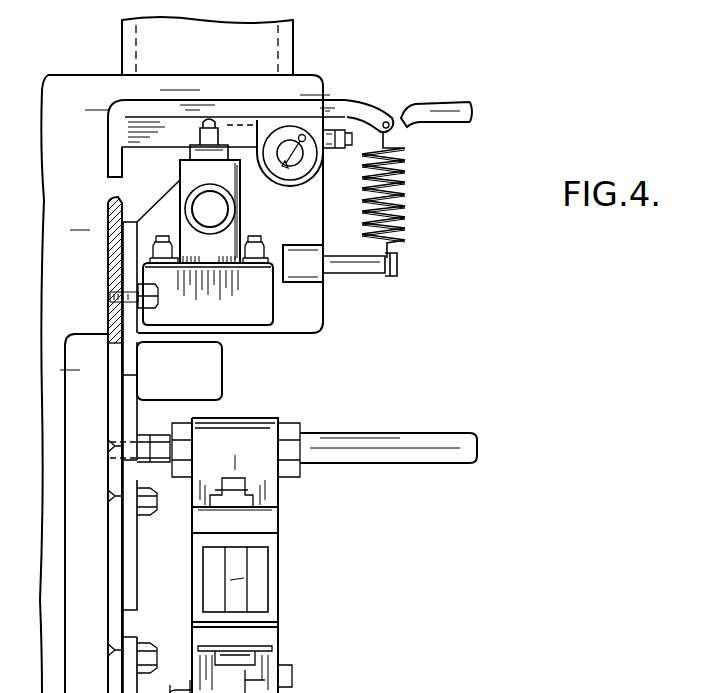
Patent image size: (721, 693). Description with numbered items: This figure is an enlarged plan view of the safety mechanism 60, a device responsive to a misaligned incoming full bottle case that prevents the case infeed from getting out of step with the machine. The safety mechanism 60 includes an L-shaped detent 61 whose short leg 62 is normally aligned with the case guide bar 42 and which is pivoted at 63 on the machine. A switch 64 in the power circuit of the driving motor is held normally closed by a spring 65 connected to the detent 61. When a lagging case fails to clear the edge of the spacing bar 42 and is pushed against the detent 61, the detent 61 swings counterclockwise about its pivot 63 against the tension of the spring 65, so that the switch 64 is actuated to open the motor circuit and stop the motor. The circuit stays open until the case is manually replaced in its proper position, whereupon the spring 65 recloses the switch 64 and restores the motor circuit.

The spacing bar 42 is at (113, 542).
The safety mechanism 60 is at (390, 86).
The L-shaped detent 61 is at (262, 111).
The short leg 62 is at (115, 152).
The pivot 63 is at (302, 166).
The switch 64 is at (217, 212).
The spring 65 is at (402, 217).